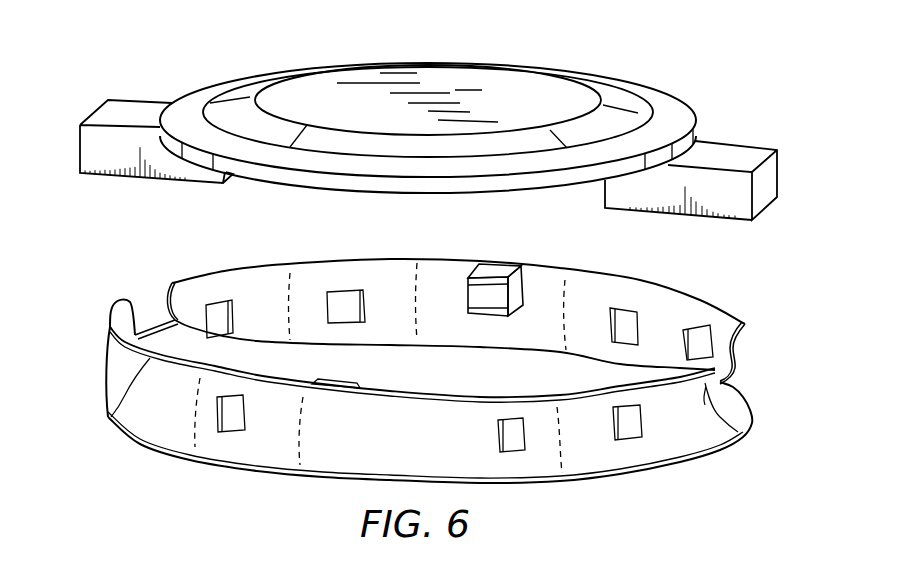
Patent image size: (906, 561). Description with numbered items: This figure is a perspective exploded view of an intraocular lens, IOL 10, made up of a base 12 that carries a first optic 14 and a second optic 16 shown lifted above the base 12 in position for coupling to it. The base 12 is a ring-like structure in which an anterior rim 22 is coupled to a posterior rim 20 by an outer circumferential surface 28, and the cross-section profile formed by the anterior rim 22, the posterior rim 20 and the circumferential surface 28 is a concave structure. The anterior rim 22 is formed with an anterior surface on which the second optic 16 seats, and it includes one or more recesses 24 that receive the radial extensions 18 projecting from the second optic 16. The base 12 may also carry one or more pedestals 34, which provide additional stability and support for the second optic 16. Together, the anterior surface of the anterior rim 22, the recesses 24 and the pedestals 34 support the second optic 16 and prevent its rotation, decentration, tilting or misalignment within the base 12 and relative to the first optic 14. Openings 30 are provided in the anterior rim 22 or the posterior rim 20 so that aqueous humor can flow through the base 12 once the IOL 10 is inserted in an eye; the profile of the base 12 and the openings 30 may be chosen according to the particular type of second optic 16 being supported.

The IOL 10 is at (221, 22).
The base 12 is at (730, 318).
The first optic 14 is at (442, 367).
The second optic 16 is at (670, 103).
The radial extensions 18 is at (94, 101).
The posterior rim 20 is at (738, 477).
The anterior rim 22 is at (272, 264).
The recesses 24 is at (135, 283).
The outer circumferential surface 28 is at (328, 445).
The openings 30 is at (502, 438).
The pedestals 34 is at (520, 277).